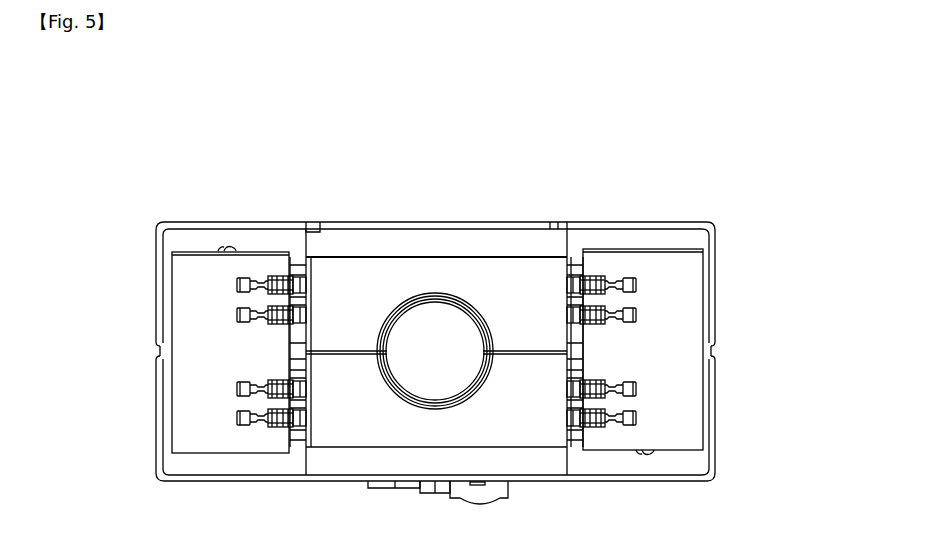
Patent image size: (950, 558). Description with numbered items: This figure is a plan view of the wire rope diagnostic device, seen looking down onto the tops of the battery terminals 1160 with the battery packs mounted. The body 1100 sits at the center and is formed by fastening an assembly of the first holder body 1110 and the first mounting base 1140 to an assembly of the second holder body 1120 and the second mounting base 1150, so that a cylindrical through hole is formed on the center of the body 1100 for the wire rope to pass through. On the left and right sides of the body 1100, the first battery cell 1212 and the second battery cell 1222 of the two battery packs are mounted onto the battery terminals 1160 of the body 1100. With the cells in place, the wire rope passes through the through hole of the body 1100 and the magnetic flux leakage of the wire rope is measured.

The body 1100 is at (438, 285).
The first holder body 1110 is at (362, 457).
The second holder body 1120 is at (512, 245).
The first mounting base 1140 is at (170, 243).
The second mounting base 1150 is at (698, 462).
The battery terminals 1160 is at (587, 275).
The first battery cell 1212 is at (188, 315).
The second battery cell 1222 is at (686, 328).